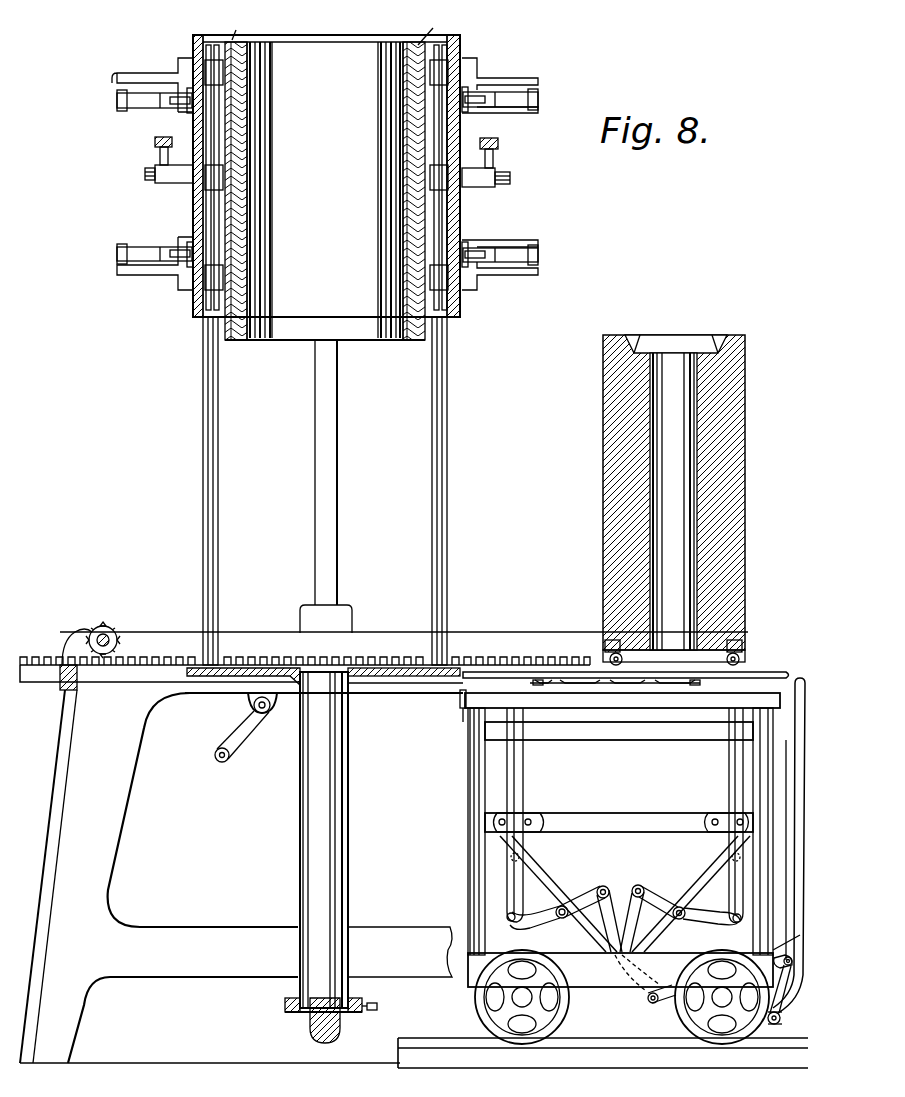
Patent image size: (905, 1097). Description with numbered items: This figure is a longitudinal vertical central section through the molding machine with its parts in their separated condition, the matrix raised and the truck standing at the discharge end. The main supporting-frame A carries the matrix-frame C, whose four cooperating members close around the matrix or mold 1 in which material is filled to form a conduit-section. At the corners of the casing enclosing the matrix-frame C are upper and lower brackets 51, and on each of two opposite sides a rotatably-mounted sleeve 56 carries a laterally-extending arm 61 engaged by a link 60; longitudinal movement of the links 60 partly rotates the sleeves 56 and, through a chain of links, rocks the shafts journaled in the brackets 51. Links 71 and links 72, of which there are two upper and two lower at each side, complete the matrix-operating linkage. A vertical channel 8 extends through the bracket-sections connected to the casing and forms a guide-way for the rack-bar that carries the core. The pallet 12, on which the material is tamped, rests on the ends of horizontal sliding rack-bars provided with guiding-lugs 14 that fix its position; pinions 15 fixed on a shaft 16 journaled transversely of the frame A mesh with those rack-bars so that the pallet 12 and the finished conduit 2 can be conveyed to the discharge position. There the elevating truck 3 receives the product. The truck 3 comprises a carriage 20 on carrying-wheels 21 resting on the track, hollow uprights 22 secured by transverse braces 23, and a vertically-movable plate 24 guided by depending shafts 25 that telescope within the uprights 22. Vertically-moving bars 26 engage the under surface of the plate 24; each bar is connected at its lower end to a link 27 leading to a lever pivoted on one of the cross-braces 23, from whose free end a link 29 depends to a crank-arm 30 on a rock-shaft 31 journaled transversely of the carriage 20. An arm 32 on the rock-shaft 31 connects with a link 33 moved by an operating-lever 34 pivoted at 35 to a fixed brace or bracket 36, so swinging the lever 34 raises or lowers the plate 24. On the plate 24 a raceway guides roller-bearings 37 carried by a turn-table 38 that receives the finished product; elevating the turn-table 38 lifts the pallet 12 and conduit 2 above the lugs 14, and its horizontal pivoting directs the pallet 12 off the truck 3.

The matrix or mold 1 is at (244, 44).
The conduit 2 is at (603, 458).
The elevating truck 3 is at (622, 817).
The vertical channel 8 is at (462, 222).
The pallet 12 is at (745, 650).
The guiding-lugs 14 is at (605, 657).
The pinions 15 is at (106, 626).
The shaft 16 is at (112, 640).
The carriage 20 is at (615, 987).
The carrying-wheels 21 is at (478, 1005).
The hollow uprights 22 is at (468, 780).
The transverse braces 23 is at (672, 740).
The vertically-movable plate 24 is at (455, 700).
The vertically-depending shafts 25 is at (462, 708).
The vertically-moving bars 26 is at (520, 780).
The link 27 is at (540, 880).
The link 29 is at (612, 895).
The crank-arm 30 is at (628, 950).
The rock-shaft 31 is at (650, 1005).
The arm 32 is at (657, 1015).
The link 33 is at (790, 958).
The operating-lever 34 is at (775, 932).
The pivot 35 is at (790, 965).
The fixed brace or bracket 36 is at (700, 690).
The roller-bearings 37 is at (540, 690).
The turn-table 38 is at (776, 676).
The brackets 51 is at (160, 88).
The sleeve 56 is at (172, 178).
The links 60 is at (158, 142).
The arm 61 is at (160, 155).
The link 71 is at (128, 110).
The links 72 is at (182, 107).
The main supporting-frame A is at (310, 847).
The matrix-frame C is at (332, 25).